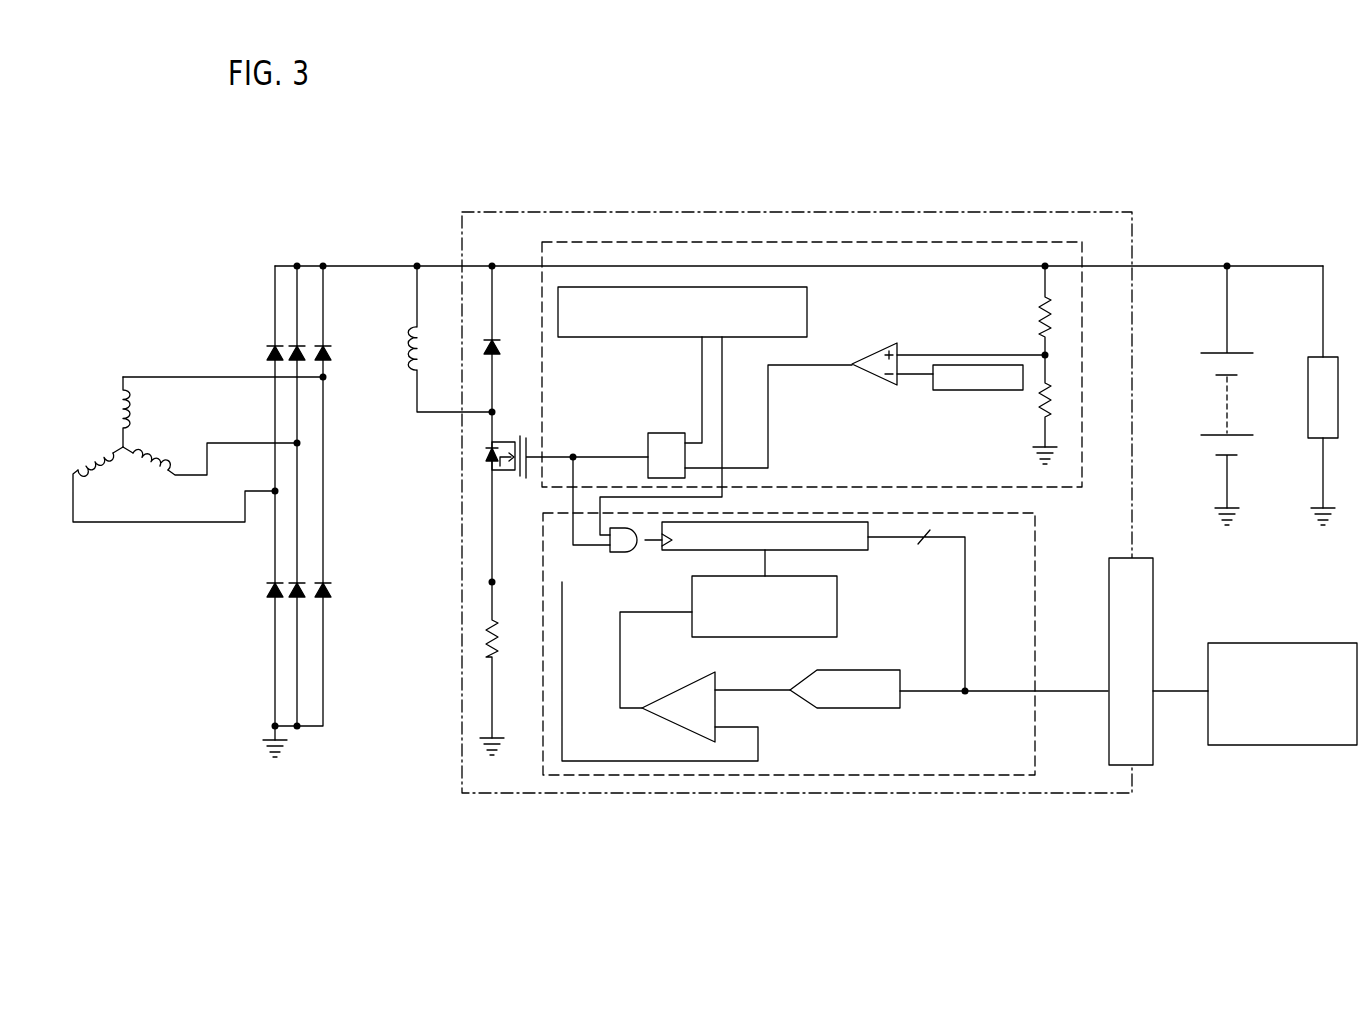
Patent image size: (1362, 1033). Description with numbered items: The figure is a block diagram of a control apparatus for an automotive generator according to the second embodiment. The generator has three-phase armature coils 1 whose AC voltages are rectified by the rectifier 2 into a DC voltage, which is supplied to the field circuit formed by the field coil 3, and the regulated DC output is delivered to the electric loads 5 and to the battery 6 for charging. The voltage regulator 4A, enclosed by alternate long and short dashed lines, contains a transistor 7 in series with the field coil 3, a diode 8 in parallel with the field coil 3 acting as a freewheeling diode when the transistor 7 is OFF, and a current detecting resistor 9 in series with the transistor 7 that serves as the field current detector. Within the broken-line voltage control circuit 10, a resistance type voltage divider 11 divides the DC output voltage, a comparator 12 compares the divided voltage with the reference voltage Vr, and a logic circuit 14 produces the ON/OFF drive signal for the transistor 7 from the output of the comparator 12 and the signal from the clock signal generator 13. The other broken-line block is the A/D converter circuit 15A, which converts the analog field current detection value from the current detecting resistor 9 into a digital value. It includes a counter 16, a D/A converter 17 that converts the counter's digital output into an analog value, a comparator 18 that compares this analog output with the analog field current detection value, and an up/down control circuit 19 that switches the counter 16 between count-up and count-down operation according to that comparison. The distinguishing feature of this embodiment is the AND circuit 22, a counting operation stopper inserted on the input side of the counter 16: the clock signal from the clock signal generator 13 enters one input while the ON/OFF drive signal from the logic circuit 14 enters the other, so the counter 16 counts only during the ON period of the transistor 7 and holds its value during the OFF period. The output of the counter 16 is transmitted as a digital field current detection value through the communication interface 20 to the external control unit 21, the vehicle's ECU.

The three-phase armature coils 1 is at (116, 374).
The rectifier 2 is at (287, 511).
The field coil 3 is at (403, 348).
The voltage regulator 4A is at (1037, 212).
The electric loads 5 is at (1333, 352).
The battery 6 is at (1238, 347).
The transistor 7 is at (485, 459).
The diode 8 is at (497, 338).
The current detecting resistor 9 is at (480, 638).
The voltage control circuit 10 is at (862, 241).
The resistance type voltage divider 11 is at (1040, 318).
The comparator 12 is at (883, 343).
The clock signal generator 13 is at (638, 338).
The logic circuit 14 is at (648, 436).
The A/D converter circuit 15A is at (893, 776).
The counter 16 is at (862, 551).
The D/A converter 17 is at (870, 670).
The comparator 18 is at (660, 700).
The up/down control circuit 19 is at (692, 592).
The communication interface 20 is at (1153, 602).
The external control unit 21 is at (1272, 643).
The AND circuit 22 is at (620, 554).